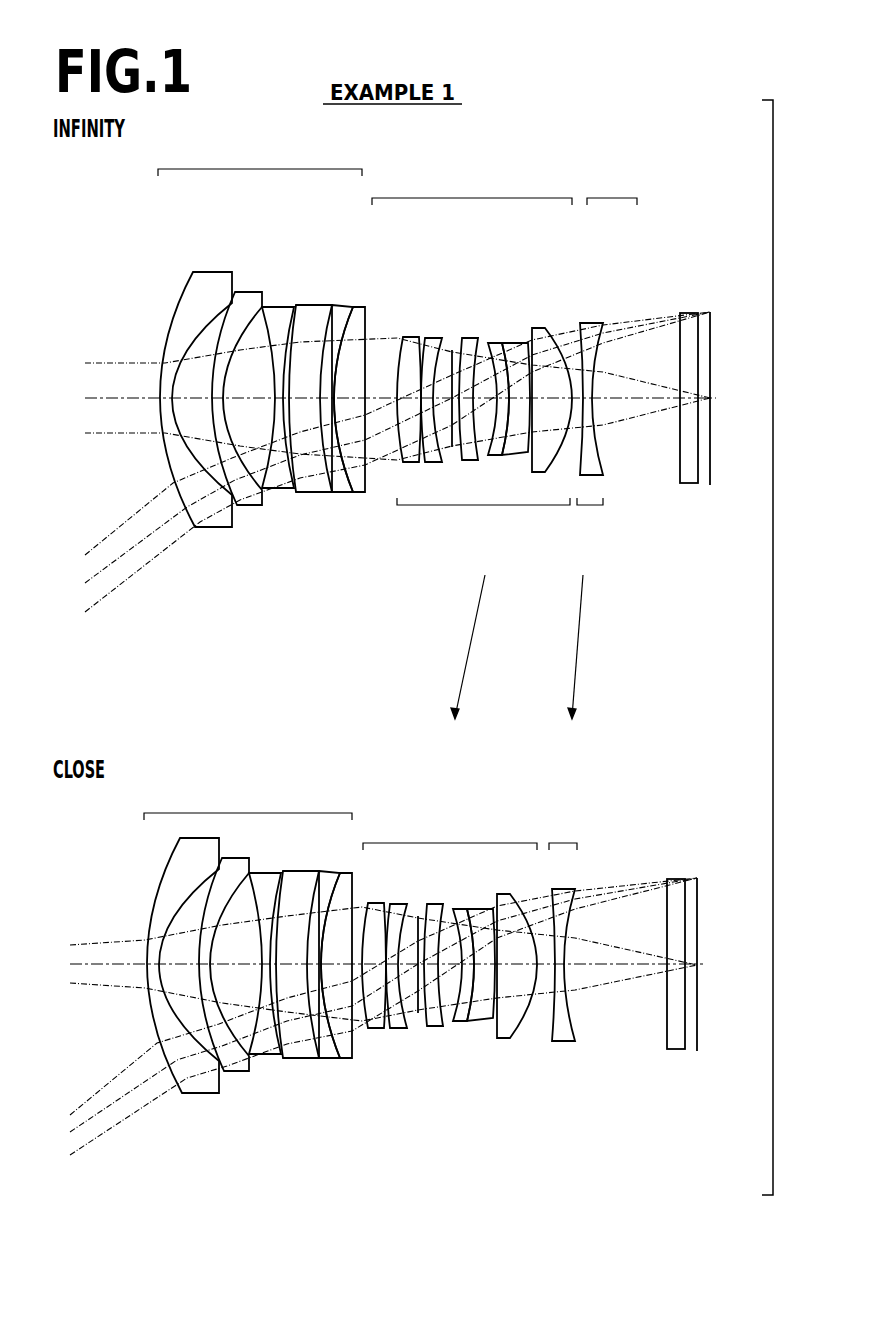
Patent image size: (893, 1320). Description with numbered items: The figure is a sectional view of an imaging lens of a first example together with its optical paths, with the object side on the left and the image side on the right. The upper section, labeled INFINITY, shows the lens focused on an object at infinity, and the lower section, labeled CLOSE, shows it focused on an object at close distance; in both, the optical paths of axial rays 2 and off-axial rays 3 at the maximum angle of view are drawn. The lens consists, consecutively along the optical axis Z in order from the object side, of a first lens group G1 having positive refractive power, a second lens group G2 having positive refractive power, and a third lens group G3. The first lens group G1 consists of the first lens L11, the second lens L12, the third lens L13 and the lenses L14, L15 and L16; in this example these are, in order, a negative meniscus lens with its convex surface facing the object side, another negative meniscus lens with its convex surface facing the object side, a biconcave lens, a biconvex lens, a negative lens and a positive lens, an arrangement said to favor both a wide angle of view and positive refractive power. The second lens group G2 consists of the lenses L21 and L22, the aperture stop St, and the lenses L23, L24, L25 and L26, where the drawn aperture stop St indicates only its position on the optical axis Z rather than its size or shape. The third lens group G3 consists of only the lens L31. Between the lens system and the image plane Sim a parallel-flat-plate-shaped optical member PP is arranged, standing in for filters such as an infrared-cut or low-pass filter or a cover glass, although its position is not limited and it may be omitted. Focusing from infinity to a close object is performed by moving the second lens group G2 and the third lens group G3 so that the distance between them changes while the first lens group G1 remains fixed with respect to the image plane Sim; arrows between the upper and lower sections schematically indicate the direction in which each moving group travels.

The first lens L11 is at (207, 277).
The second lens L12 is at (253, 293).
The third lens L13 is at (260, 303).
The lens L14 is at (283, 308).
The lens L15 is at (323, 305).
The lens L16 is at (358, 305).
The lens L21 is at (412, 337).
The lens L22 is at (432, 338).
The lens L23 is at (467, 338).
The lens L24 is at (492, 343).
The lens L25 is at (510, 343).
The lens L26 is at (538, 328).
The lens L31 is at (590, 323).
The first lens group G1 is at (253, 483).
The second lens group G2 is at (467, 513).
The third lens group G3 is at (592, 513).
The aperture stop St is at (452, 348).
The optical member PP is at (688, 485).
The image plane Sim is at (716, 470).
The optical axis Z is at (105, 392).
The axial rays 2 is at (80, 355).
The off-axial rays 3 is at (79, 553).